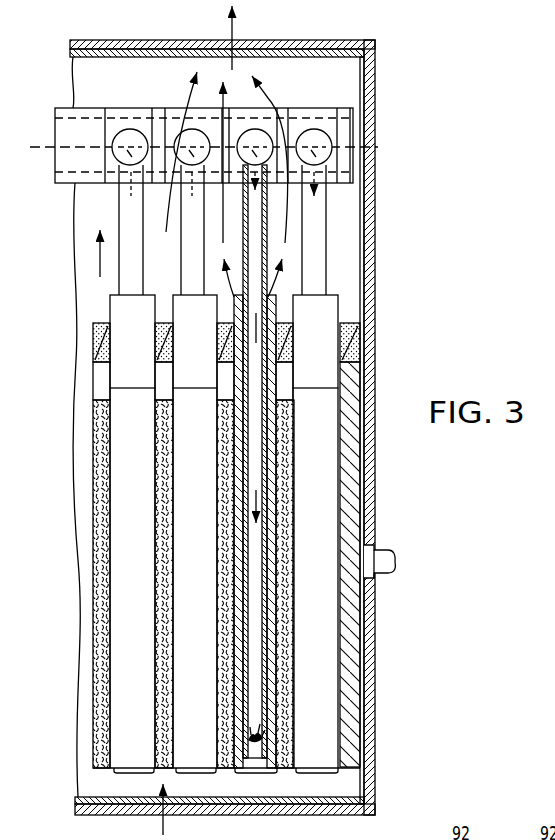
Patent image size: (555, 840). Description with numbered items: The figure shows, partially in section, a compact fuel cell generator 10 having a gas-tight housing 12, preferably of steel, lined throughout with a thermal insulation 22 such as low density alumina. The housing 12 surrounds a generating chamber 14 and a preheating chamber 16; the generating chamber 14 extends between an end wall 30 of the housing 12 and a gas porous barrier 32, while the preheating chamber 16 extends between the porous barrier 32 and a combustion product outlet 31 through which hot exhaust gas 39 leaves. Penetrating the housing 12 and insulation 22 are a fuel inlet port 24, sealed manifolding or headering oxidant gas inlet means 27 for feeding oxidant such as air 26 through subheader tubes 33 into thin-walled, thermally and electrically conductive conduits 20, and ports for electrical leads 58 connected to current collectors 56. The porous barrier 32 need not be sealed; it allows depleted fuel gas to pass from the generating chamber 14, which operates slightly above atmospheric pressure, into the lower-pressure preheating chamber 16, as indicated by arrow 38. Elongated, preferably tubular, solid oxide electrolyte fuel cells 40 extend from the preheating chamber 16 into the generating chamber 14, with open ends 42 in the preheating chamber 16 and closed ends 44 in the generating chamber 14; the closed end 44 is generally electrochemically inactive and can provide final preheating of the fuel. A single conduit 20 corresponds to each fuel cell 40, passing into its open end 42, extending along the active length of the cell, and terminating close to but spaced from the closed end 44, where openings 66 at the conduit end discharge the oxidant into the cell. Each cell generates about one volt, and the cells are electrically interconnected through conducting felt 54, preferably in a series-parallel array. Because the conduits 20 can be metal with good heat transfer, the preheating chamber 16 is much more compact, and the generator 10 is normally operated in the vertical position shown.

The fuel cell generator 10 is at (242, 427).
The gas-tight housing 12 is at (373, 197).
The generating chamber 14 is at (67, 568).
The preheating chamber 16 is at (353, 253).
The conduits 20 is at (242, 238).
The thermal insulation 22 is at (364, 225).
The fuel inlet port 24 is at (173, 817).
The oxidant gas 26 is at (88, 147).
The oxidant gas inlet means 27 is at (122, 107).
The end wall 30 is at (215, 793).
The combustion product outlet 31 is at (242, 35).
The gas porous barrier 32 is at (93, 342).
The subheader tubes 33 is at (319, 128).
The arrow 38 is at (100, 260).
The hot exhaust gas 39 is at (265, 80).
The solid oxide electrolyte fuel cells 40 is at (143, 566).
The open ends 42 is at (117, 294).
The closed ends 44 is at (130, 771).
The conducting felt 54 is at (286, 770).
The current collectors 56 is at (357, 643).
The electrical leads 58 is at (384, 549).
The openings 66 is at (257, 748).